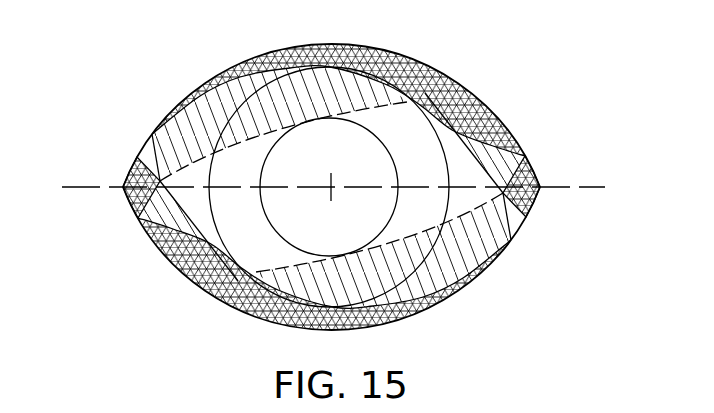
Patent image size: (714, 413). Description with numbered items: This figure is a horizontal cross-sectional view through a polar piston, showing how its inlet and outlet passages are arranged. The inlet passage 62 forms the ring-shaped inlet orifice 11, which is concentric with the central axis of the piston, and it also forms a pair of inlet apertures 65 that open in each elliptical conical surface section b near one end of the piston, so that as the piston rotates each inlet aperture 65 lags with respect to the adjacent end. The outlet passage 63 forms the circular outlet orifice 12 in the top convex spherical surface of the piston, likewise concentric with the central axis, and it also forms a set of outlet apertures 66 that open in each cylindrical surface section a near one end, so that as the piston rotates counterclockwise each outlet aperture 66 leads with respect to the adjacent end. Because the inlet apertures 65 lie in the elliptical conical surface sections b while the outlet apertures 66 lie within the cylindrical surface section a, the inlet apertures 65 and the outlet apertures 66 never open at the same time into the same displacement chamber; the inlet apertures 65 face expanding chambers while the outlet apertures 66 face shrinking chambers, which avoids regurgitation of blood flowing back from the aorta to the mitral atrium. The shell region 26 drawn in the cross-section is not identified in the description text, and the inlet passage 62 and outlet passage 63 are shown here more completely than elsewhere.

The outer shell layer 26 is at (237, 67).
The circular outlet orifice 12 is at (367, 162).
The ring-shaped inlet orifice 11 is at (423, 158).
The inlet passage 62 is at (435, 175).
The outlet passage 63 is at (387, 167).
The inlet aperture 65 is at (145, 147).
The outlet aperture 66 is at (134, 201).
The cylindrical surface section a is at (540, 181).
The elliptical conical surface section b is at (447, 300).